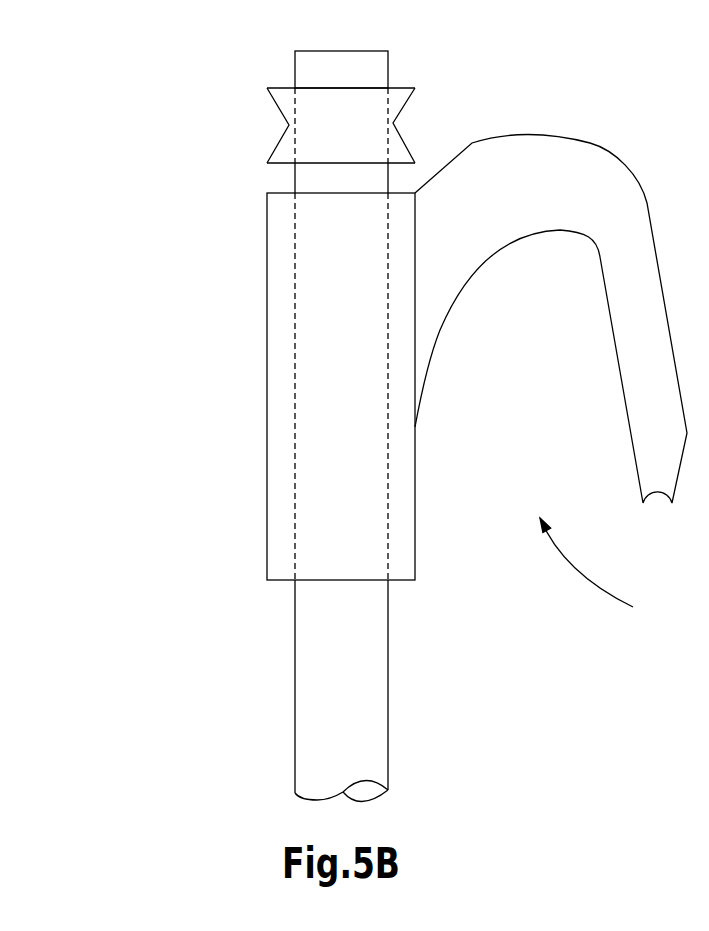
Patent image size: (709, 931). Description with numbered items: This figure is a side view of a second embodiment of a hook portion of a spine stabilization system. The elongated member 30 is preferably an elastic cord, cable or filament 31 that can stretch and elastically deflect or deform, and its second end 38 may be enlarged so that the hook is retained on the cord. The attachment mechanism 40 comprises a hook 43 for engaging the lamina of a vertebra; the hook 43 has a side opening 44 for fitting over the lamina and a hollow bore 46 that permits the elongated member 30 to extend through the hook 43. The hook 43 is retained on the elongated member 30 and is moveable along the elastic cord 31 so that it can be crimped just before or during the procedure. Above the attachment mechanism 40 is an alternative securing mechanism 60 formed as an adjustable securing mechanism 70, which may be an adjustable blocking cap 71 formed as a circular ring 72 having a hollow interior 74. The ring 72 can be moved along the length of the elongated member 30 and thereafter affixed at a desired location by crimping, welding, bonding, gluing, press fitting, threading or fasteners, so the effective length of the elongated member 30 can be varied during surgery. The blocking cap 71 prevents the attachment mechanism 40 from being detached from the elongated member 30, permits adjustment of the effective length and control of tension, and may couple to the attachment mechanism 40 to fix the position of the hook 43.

The elongated member 30 is at (340, 652).
The elastic cord, cable or filament 31 is at (330, 747).
The second end 38 is at (352, 68).
The attachment mechanism 40 is at (283, 493).
The hook 43 is at (587, 182).
The side opening 44 is at (604, 571).
The hollow bore 46 is at (333, 397).
The securing mechanism 60 is at (405, 106).
The adjustable securing mechanism 70 is at (400, 85).
The adjustable blocking cap 71 is at (362, 146).
The circular ring 72 is at (288, 125).
The hollow interior 74 is at (312, 103).